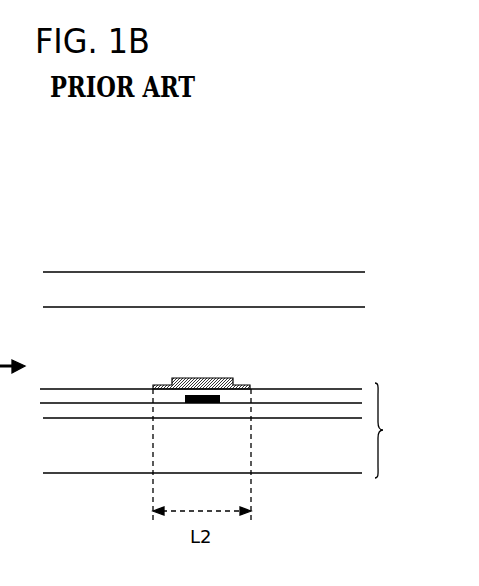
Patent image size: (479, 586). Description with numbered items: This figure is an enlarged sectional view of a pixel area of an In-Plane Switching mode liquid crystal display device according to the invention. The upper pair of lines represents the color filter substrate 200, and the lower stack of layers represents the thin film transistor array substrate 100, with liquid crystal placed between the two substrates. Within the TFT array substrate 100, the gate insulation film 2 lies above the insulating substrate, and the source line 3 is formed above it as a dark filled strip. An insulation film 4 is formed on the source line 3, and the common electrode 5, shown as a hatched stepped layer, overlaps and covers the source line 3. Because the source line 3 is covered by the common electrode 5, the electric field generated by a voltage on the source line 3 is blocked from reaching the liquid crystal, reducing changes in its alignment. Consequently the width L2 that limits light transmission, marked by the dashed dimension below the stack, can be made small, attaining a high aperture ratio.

The color filter substrate 200 is at (357, 293).
The thin film transistor array substrate 100 is at (213, 418).
The gate insulation film 2 is at (44, 417).
The source line 3 is at (200, 395).
The insulation film 4 is at (50, 393).
The common electrode 5 is at (238, 387).